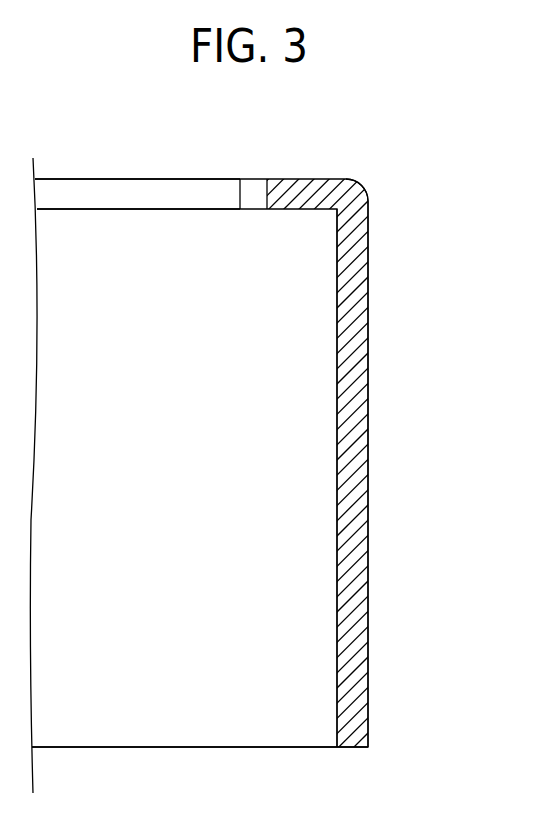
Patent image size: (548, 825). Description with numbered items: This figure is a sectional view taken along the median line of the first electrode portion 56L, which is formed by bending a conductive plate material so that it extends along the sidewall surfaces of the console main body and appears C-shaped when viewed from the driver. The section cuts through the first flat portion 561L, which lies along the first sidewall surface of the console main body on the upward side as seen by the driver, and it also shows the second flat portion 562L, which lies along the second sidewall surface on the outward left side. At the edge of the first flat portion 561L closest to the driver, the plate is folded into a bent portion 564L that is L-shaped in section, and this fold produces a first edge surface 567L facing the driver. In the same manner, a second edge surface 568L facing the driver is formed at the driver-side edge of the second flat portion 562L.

The first electrode portion 56L is at (487, 114).
The first flat portion 561L is at (370, 481).
The second flat portion 562L is at (192, 748).
The bent portion 564L is at (363, 183).
The first edge surface 567L is at (291, 179).
The second edge surface 568L is at (162, 179).